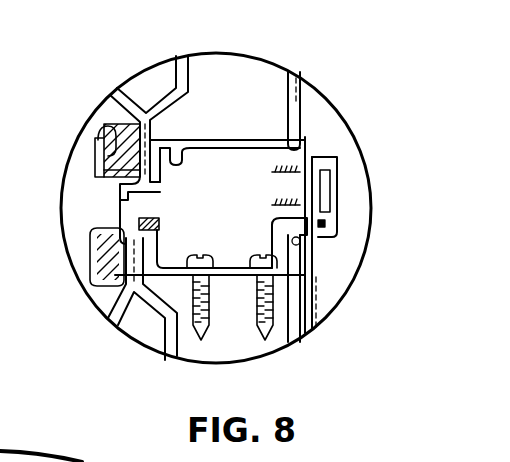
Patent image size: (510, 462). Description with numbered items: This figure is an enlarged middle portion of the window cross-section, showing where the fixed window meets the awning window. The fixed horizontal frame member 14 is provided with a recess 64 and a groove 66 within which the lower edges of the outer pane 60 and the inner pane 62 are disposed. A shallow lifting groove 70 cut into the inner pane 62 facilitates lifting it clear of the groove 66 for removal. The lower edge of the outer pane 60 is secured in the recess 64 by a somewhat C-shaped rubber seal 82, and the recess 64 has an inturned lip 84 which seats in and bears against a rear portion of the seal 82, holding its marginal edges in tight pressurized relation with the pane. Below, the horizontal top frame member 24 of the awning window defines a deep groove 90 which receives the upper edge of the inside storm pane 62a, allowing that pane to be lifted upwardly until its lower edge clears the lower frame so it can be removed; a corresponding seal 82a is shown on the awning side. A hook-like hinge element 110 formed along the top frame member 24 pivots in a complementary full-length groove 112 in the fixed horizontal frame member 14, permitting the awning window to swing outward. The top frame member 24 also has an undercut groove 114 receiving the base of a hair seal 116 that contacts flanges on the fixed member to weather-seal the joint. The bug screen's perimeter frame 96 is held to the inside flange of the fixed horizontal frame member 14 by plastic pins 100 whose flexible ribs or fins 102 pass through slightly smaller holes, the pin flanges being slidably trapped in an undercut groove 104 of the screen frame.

The fixed horizontal frame member 14 is at (197, 132).
The horizontal top frame member 24 is at (230, 276).
The outer window pane 60 is at (200, 62).
The inner window pane 62 is at (277, 66).
The inside storm window pane 62a is at (301, 332).
The recess 64 is at (104, 172).
The groove 66 is at (307, 138).
The lifting groove 70 is at (313, 77).
The rubber seal 82 is at (97, 148).
The rubber seal 82a is at (100, 290).
The inturned lip 84 is at (110, 122).
The deep groove 90 is at (300, 252).
The perimeter frame 96 is at (340, 155).
The plastic pins 100 is at (278, 186).
The flexible ribs or fins 102 is at (279, 204).
The undercut groove 104 is at (300, 240).
The hook-like hinge element 110 is at (118, 208).
The full-length groove 112 is at (120, 193).
The undercut groove 114 is at (158, 228).
The hair seal 116 is at (160, 219).